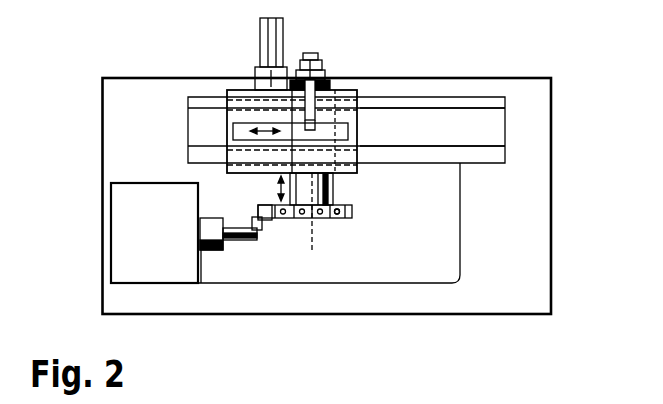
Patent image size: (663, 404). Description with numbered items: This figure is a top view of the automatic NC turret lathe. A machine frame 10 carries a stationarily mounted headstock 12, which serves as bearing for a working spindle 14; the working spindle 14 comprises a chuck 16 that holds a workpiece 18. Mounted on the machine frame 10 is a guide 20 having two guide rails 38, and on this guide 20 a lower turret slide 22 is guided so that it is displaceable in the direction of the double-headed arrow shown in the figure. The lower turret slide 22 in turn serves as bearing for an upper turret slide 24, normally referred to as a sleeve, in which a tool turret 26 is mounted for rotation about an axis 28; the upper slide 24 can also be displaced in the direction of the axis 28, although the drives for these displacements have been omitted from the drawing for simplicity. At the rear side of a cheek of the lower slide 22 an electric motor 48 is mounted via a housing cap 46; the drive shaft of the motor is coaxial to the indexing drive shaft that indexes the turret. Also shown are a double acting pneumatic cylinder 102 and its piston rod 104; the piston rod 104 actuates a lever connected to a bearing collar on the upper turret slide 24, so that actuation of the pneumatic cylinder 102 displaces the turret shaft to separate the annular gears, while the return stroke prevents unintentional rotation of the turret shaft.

The machine frame 10 is at (553, 201).
The headstock 12 is at (119, 202).
The working spindle 14 is at (208, 260).
The chuck 16 is at (206, 222).
The workpiece 18 is at (240, 243).
The guide 20 is at (457, 96).
The lower turret slide 22 is at (348, 116).
The upper turret slide 24 is at (334, 190).
The tool turret 26 is at (326, 222).
The axis 28 is at (311, 223).
The guide rails 38 is at (403, 152).
The housing cap 46 is at (258, 72).
The electric motor 48 is at (262, 25).
The double acting pneumatic cylinder 102 is at (318, 82).
The piston rod 104 is at (312, 52).